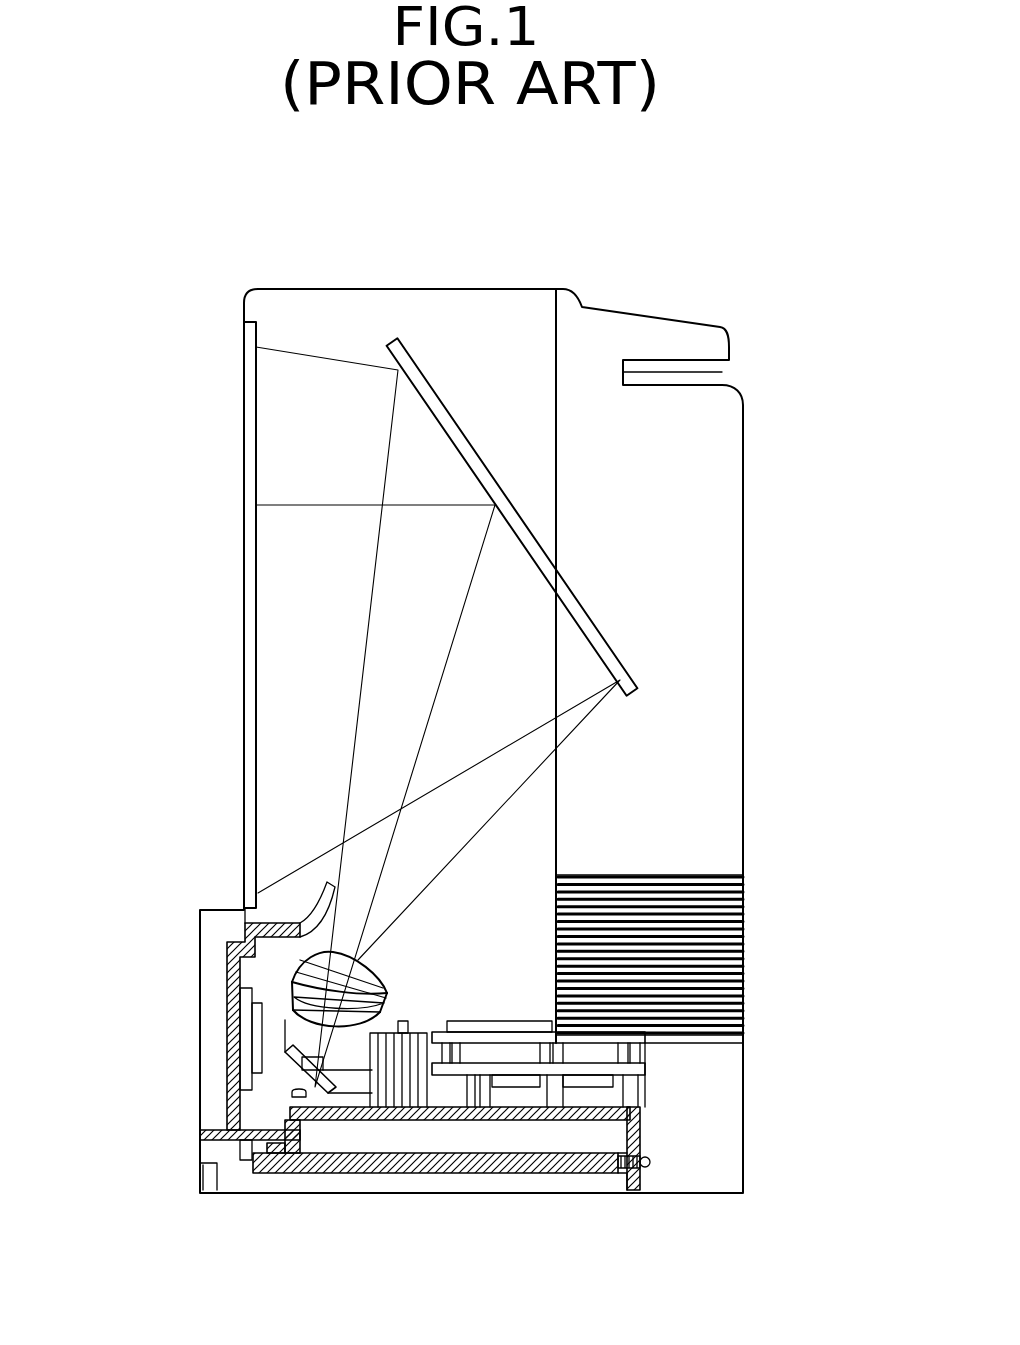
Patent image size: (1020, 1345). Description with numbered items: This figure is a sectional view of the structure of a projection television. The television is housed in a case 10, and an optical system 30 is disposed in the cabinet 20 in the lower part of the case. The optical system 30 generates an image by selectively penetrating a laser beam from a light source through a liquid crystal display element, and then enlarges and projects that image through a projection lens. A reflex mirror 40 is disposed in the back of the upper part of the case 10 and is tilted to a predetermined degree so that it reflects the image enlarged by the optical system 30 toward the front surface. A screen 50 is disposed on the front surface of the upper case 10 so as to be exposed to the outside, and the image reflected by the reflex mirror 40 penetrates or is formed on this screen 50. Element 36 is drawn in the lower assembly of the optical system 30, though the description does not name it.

The case 10 is at (643, 313).
The cabinet 20 is at (262, 1163).
The optical system 30 is at (357, 1055).
The image sensor board 36 is at (507, 1025).
The reflex mirror 40 is at (622, 677).
The screen 50 is at (248, 378).